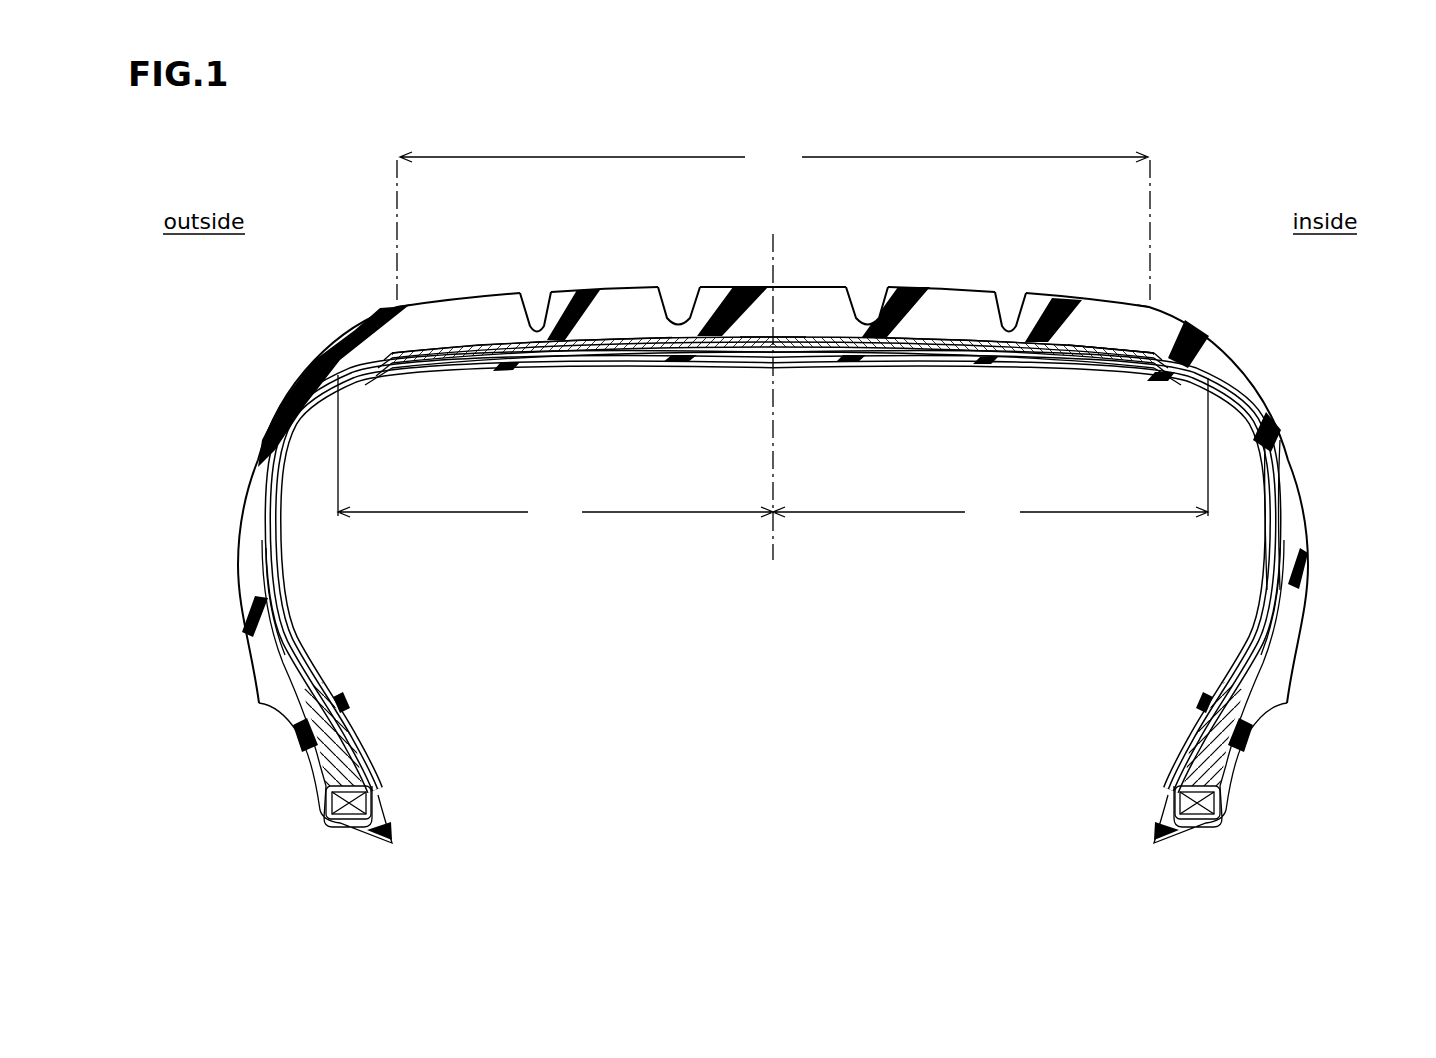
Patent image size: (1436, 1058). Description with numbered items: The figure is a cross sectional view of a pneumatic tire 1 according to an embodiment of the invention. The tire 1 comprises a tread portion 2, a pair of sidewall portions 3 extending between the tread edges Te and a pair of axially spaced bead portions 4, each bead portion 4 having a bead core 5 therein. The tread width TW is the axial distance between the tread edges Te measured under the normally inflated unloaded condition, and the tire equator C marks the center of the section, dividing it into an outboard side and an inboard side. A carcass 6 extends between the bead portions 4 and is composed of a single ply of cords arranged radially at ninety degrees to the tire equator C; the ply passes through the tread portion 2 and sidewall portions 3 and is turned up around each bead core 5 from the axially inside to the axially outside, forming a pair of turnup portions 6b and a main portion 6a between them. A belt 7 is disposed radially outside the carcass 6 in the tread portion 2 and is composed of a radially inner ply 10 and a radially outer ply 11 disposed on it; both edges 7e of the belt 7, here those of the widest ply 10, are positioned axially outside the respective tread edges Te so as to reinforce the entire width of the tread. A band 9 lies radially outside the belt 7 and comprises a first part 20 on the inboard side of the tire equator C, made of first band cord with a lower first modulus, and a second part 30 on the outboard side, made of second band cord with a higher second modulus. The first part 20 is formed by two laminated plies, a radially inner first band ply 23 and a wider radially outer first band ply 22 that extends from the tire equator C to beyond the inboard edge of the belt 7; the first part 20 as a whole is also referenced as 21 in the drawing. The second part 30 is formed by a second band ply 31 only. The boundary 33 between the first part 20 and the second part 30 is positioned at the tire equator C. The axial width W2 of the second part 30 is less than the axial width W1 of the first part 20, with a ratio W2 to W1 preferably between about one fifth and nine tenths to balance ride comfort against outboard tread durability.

The pneumatic tire 1 is at (1282, 329).
The tread portion 2 is at (832, 268).
The sidewall portions 3 is at (1320, 522).
The bead portions 4 is at (1256, 778).
The bead core 5 is at (1184, 800).
The carcass 6 is at (1118, 548).
The main portion 6a is at (1270, 531).
The turnup portions 6b is at (1277, 560).
The belt 7 is at (608, 437).
The edges of the belt 7e is at (1189, 390).
The band 9 is at (463, 344).
The radially inner ply 10 is at (652, 349).
The radially outer ply 11 is at (718, 344).
The first part 20 is at (965, 222).
The edge band ply 21 is at (1020, 343).
The radially outer first band ply 22 is at (962, 341).
The radially inner first band ply 23 is at (1115, 344).
The second part 30 is at (610, 341).
The second band ply 31 is at (525, 343).
The boundary 33 is at (788, 338).
The tread edges Te is at (1150, 307).
The tire equator C is at (773, 380).
The tread width TW is at (773, 220).
The axial width of the first part W1 is at (990, 453).
The axial width of the second part W2 is at (555, 451).